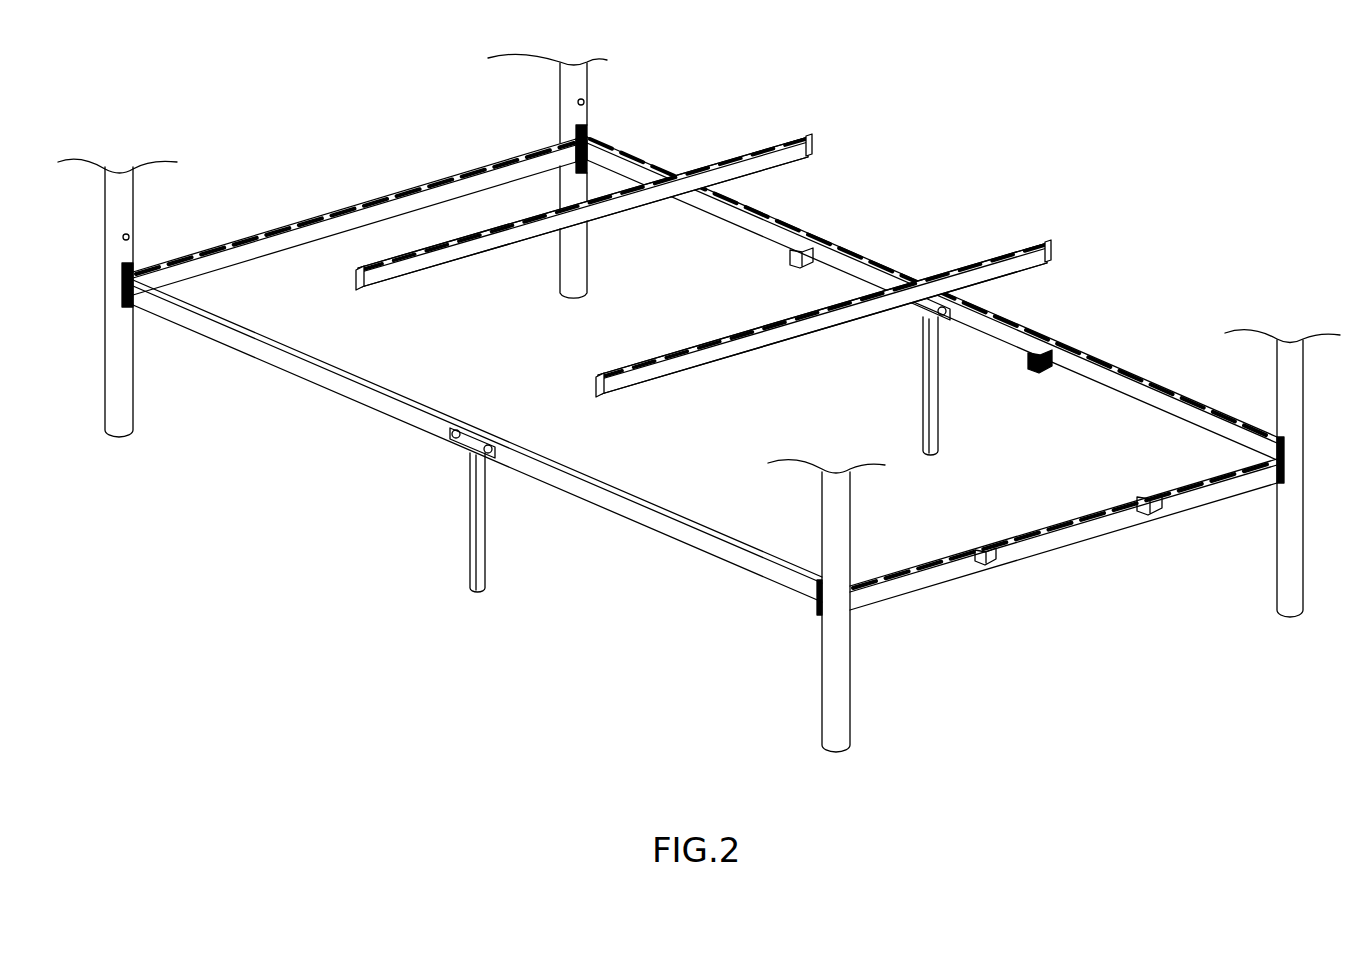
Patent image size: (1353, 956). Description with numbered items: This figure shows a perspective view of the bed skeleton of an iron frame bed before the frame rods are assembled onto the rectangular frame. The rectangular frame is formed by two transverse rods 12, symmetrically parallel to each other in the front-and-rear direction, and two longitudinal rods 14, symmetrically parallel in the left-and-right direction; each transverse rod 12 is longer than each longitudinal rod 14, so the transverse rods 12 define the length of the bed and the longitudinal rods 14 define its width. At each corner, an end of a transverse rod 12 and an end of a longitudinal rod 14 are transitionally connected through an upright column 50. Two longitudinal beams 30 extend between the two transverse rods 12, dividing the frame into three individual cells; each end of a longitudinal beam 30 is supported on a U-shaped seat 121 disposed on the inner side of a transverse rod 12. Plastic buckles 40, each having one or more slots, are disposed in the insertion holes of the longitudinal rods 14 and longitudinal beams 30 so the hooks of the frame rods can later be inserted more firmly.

The transverse rod 12 is at (1113, 367).
The longitudinal rod 14 is at (393, 192).
The longitudinal beam 30 is at (788, 138).
The plastic buckle 40 is at (323, 210).
The upright column 50 is at (838, 697).
The U-shaped seat 121 is at (1037, 352).